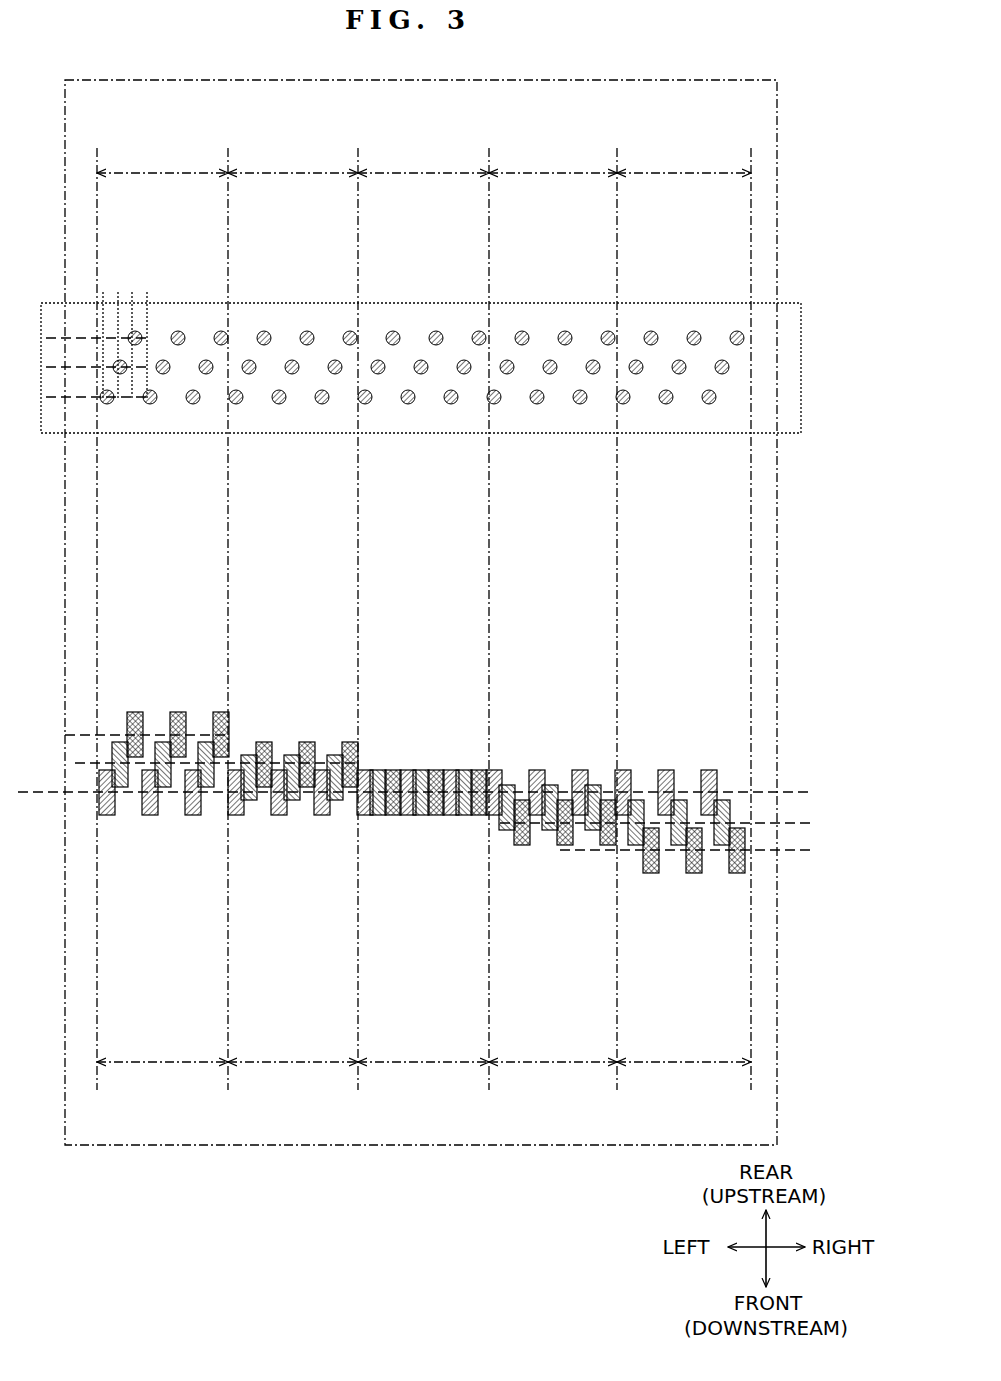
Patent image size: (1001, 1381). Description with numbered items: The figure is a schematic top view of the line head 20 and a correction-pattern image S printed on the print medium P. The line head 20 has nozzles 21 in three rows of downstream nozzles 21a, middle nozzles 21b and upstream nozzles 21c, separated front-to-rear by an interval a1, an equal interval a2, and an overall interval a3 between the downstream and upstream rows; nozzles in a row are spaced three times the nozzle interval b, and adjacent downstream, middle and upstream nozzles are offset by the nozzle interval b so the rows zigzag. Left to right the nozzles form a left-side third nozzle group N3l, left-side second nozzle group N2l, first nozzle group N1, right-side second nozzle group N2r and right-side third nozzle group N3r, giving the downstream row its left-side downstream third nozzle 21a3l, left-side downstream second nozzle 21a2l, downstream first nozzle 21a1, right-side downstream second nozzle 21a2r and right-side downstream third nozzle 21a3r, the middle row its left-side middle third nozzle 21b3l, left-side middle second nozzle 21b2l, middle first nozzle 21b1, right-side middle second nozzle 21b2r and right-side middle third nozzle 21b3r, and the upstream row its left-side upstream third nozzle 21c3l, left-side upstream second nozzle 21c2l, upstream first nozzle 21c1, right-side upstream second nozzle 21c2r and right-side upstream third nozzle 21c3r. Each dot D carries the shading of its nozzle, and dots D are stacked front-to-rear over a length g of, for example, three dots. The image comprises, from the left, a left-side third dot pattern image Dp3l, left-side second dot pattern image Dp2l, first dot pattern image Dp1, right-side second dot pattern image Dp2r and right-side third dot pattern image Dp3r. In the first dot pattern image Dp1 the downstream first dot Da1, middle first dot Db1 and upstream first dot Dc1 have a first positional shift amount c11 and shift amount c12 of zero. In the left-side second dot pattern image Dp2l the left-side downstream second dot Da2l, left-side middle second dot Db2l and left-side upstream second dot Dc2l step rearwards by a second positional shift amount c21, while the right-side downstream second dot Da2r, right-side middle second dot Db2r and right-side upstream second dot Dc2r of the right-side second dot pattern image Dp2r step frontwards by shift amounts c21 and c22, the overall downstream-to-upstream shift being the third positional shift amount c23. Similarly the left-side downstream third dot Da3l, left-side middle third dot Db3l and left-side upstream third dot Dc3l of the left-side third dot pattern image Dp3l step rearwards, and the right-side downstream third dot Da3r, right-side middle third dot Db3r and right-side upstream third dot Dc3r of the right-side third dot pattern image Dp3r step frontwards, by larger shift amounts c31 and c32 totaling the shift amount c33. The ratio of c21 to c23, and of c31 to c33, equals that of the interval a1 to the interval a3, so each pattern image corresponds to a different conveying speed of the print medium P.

The print medium P is at (560, 80).
The line head 20 is at (788, 302).
The nozzle 21 is at (740, 410).
The downstream nozzle 21a is at (752, 397).
The middle nozzle 21b is at (752, 369).
The upstream nozzle 21c is at (752, 340).
The left-side upstream third nozzle 21c3l is at (178, 332).
The left-side upstream second nozzle 21c2l is at (307, 332).
The upstream first nozzle 21c1 is at (436, 332).
The right-side upstream second nozzle 21c2r is at (565, 332).
The right-side upstream third nozzle 21c3r is at (694, 332).
The left-side middle third nozzle 21b3l is at (169, 371).
The left-side middle second nozzle 21b2l is at (298, 371).
The middle first nozzle 21b1 is at (427, 371).
The right-side middle second nozzle 21b2r is at (556, 371).
The right-side middle third nozzle 21b3r is at (685, 371).
The left-side downstream third nozzle 21a3l is at (152, 404).
The left-side downstream second nozzle 21a2l is at (281, 404).
The downstream first nozzle 21a1 is at (410, 404).
The right-side downstream second nozzle 21a2r is at (539, 404).
The right-side downstream third nozzle 21a3r is at (668, 404).
The first nozzle group N1 is at (423, 149).
The left-side second nozzle group N2l is at (293, 149).
The right-side second nozzle group N2r is at (553, 149).
The left-side third nozzle group N3l is at (162, 149).
The right-side third nozzle group N3r is at (684, 149).
The correction-pattern image S is at (455, 690).
The dot D is at (476, 728).
The left-side downstream third dot Da3l is at (148, 818).
The left-side middle third dot Db3l is at (170, 802).
The left-side upstream third dot Dc3l is at (207, 762).
The left-side downstream second dot Da2l is at (278, 818).
The left-side middle second dot Db2l is at (292, 802).
The left-side upstream second dot Dc2l is at (307, 790).
The downstream first dot Da1 is at (408, 818).
The middle first dot Db1 is at (421, 818).
The upstream first dot Dc1 is at (436, 818).
The right-side downstream second dot Da2r is at (537, 818).
The right-side middle second dot Db2r is at (550, 832).
The right-side upstream second dot Dc2r is at (565, 847).
The right-side downstream third dot Da3r is at (666, 818).
The right-side middle third dot Db3r is at (679, 848).
The right-side upstream third dot Dc3r is at (694, 875).
The first dot pattern image Dp1 is at (423, 1078).
The left-side second dot pattern image Dp2l is at (293, 1091).
The right-side second dot pattern image Dp2r is at (553, 1091).
The left-side third dot pattern image Dp3l is at (162, 1091).
The right-side third dot pattern image Dp3r is at (684, 1091).
The first positional shift amount c11 is at (408, 770).
The positional shift amount c12 is at (421, 770).
The second positional shift amount c21 is at (206, 742).
The positional shift amount c22 is at (221, 712).
The third positional shift amount c23 is at (178, 640).
The positional shift amount c31 is at (88, 763).
The positional shift amount c32 is at (75, 735).
The positional shift amount c33 is at (855, 790).
The interval a1 is at (88, 367).
The interval a2 is at (88, 338).
The interval a3 is at (48, 338).
The nozzle interval b is at (147, 292).
The length g is at (745, 830).